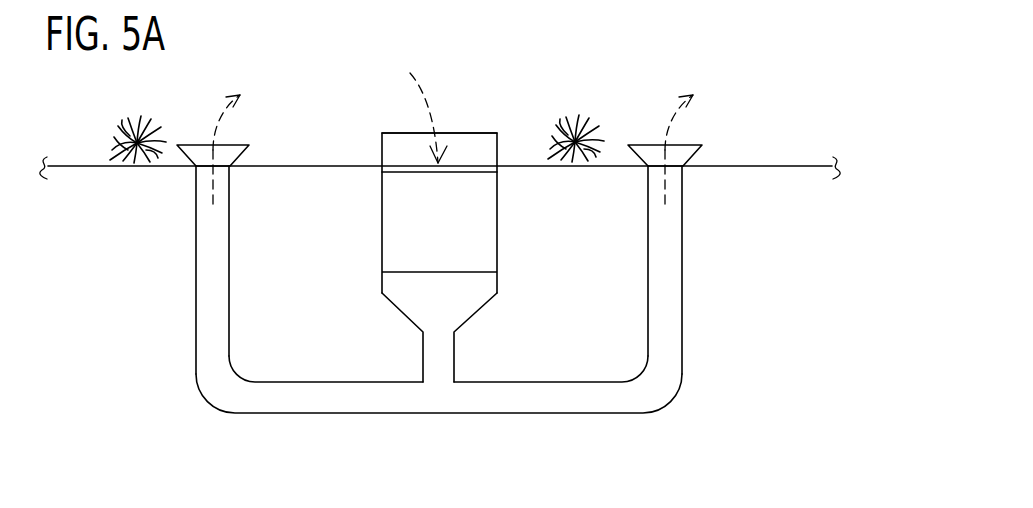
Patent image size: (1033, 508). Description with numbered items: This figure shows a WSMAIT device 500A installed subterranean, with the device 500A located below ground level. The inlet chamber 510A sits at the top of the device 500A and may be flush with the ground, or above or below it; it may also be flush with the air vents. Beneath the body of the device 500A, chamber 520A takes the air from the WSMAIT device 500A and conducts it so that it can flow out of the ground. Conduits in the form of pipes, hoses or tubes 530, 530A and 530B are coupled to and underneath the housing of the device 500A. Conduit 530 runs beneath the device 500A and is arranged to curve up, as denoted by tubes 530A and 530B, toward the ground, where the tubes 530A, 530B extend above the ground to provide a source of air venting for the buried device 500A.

The WSMAIT device 500A is at (623, 161).
The inlet chamber 510A is at (468, 148).
The chamber 520A is at (412, 295).
The conduit 530 is at (530, 397).
The tube 530A is at (683, 283).
The tube 530B is at (196, 283).